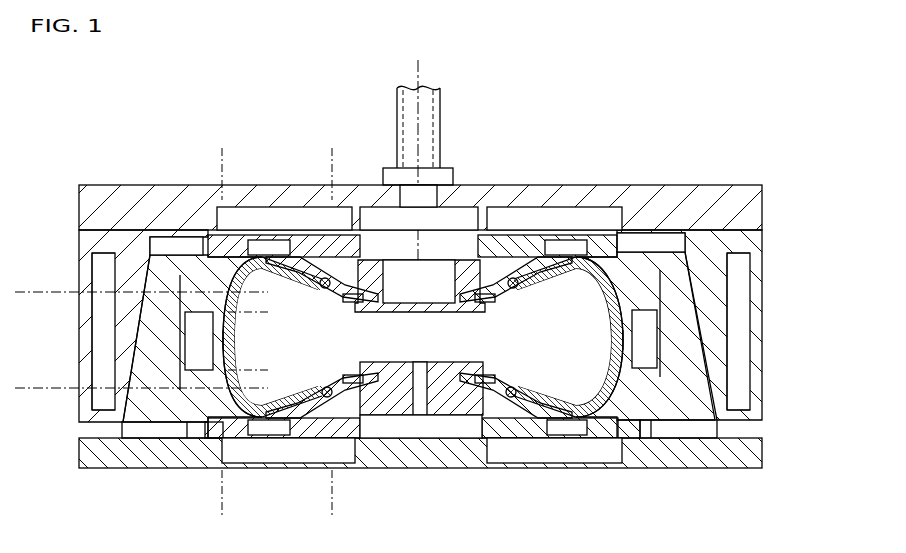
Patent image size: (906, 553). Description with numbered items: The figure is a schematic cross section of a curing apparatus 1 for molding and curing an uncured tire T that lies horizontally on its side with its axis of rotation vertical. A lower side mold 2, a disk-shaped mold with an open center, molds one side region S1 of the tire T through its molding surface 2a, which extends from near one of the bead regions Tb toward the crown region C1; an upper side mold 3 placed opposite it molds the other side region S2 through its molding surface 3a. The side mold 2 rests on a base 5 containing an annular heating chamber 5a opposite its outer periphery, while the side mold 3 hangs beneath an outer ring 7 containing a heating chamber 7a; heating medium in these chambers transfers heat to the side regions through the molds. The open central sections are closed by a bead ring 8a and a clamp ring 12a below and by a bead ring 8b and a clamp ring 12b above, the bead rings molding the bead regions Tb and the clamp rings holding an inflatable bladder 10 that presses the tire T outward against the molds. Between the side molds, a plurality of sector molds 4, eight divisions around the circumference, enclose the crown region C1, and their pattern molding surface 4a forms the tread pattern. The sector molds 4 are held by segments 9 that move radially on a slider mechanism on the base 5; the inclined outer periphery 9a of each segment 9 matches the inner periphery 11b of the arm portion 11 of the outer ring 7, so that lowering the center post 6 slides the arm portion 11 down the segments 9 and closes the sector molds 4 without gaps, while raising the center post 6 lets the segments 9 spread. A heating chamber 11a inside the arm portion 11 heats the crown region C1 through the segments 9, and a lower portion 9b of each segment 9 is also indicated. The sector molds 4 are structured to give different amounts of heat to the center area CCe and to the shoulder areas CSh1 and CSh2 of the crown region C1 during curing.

The curing apparatus 1 is at (345, 114).
The side mold 2 is at (303, 430).
The molding surface 2a is at (292, 402).
The side mold 3 is at (247, 240).
The molding surface 3a is at (292, 273).
The sector mold 4 is at (182, 277).
The pattern molding surface 4a is at (228, 347).
The base 5 is at (427, 457).
The heating chamber 5a is at (253, 452).
The center post 6 is at (432, 140).
The outer ring 7 is at (500, 206).
The heating chamber 7a is at (300, 217).
The bead ring 8a is at (352, 378).
The bead ring 8b is at (352, 298).
The segment 9 is at (120, 263).
The outer periphery 9a is at (120, 266).
The housing foot 9b is at (182, 423).
The bladder 10 is at (600, 297).
The arm portion 11 is at (88, 330).
The heating chamber 11a is at (98, 367).
The inner periphery 11b is at (112, 412).
The clamp ring 12a is at (398, 370).
The clamp ring 12b is at (462, 312).
The tire T is at (598, 261).
The bead region Tb is at (327, 288).
The crown region C1 is at (18, 292).
The side region S1 is at (332, 508).
The side region S2 is at (332, 152).
The shoulder area CSh1 is at (262, 370).
The shoulder area CSh2 is at (262, 292).
The center area CCe is at (262, 312).